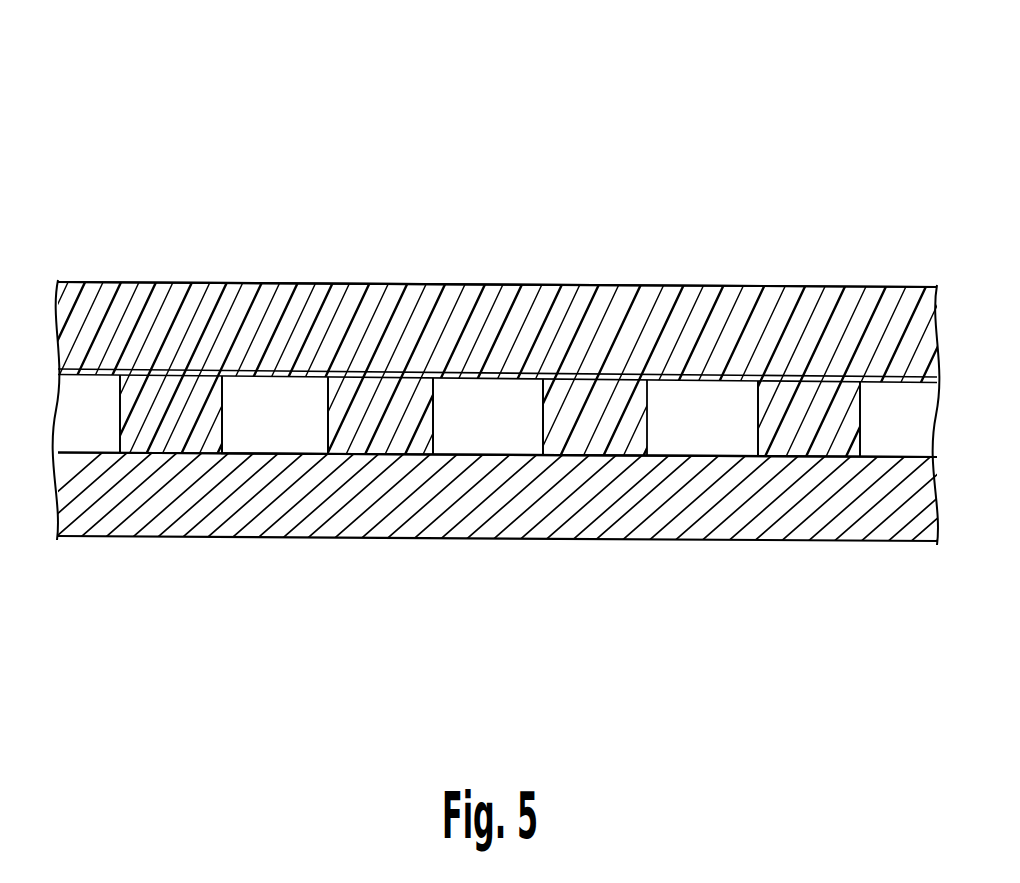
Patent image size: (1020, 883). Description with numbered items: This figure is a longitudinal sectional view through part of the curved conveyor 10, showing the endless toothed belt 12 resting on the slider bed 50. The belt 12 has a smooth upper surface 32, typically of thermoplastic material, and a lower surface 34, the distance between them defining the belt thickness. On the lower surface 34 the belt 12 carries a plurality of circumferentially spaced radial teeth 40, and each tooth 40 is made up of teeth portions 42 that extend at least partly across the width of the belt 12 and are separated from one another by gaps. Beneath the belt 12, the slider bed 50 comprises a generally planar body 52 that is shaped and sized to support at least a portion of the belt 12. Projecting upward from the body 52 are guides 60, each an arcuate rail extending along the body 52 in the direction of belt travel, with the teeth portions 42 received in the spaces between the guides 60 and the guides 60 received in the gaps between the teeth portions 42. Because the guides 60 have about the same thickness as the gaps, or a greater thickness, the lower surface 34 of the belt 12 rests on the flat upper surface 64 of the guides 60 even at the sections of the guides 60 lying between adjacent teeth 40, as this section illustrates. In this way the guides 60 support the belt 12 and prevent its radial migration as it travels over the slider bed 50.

The conveyor 10 is at (404, 42).
The endless toothed belt 12 is at (905, 287).
The upper surface 32 is at (700, 287).
The lower surface 34 is at (195, 578).
The radial teeth 40 is at (132, 407).
The teeth portions 42 is at (172, 413).
The slider bed 50 is at (676, 543).
The planar body 52 is at (408, 492).
The guide 60 is at (280, 422).
The upper surface of the guide 64 is at (197, 500).